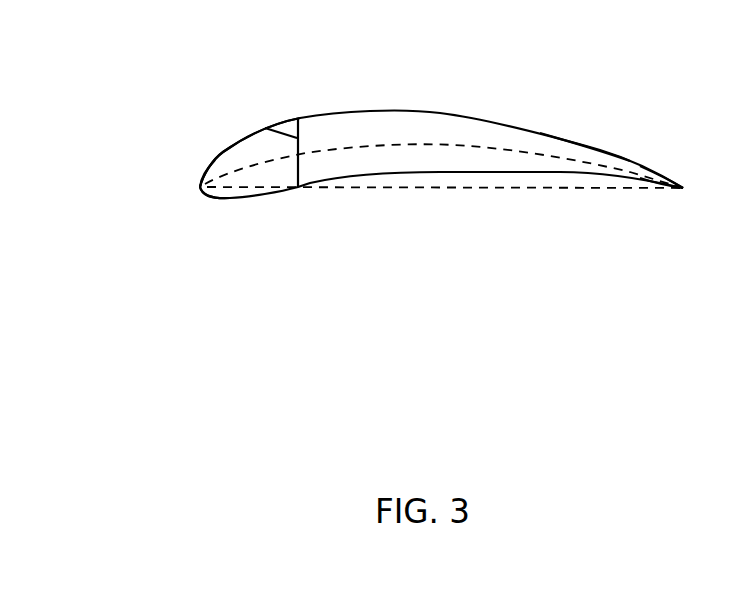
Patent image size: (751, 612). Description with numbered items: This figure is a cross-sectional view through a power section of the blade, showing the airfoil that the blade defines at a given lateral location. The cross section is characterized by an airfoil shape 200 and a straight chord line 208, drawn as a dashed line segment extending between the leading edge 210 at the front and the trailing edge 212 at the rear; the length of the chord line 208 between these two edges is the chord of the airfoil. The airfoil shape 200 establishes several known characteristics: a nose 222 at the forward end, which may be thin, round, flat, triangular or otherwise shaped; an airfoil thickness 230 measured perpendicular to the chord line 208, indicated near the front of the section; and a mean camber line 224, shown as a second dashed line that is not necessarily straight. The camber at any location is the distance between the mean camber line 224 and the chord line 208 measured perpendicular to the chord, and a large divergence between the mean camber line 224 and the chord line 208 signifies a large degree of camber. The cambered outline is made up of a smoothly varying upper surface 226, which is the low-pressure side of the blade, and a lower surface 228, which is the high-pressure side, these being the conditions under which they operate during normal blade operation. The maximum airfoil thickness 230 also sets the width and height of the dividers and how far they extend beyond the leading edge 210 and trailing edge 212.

The airfoil shape 200 is at (427, 112).
The chord line 208 is at (327, 190).
The leading edge 210 is at (200, 187).
The trailing edge 212 is at (685, 190).
The nose 222 is at (215, 160).
The mean camber line 224 is at (545, 157).
The upper surface 226 is at (628, 160).
The lower surface 228 is at (560, 173).
The airfoil thickness 230 is at (265, 128).